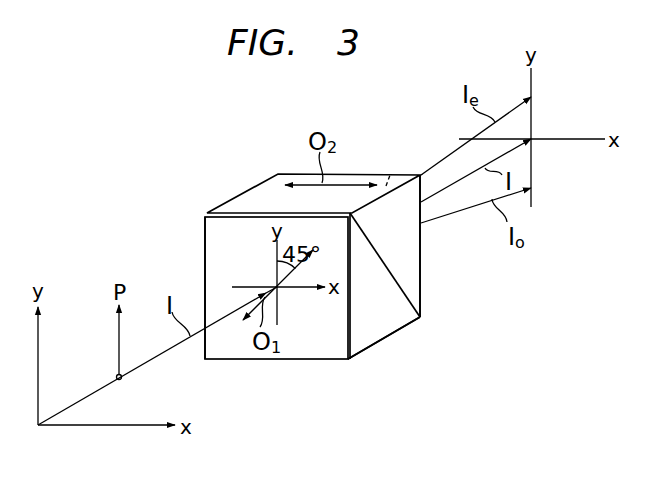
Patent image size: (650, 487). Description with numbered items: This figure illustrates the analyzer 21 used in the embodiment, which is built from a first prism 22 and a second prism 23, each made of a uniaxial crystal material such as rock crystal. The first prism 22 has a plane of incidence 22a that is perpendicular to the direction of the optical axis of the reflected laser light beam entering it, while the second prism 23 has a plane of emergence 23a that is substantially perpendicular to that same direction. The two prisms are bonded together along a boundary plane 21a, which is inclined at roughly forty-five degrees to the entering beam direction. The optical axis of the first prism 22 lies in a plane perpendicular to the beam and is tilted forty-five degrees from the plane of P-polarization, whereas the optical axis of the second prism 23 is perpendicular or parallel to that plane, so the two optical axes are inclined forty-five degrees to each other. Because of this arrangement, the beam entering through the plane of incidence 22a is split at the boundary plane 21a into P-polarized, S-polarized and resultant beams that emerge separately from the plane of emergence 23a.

The analyzer 21 is at (197, 197).
The boundary plane 21a is at (387, 266).
The first prism 22 is at (388, 336).
The plane of incidence 22a is at (207, 246).
The second prism 23 is at (416, 262).
The plane of emergence 23a is at (386, 193).